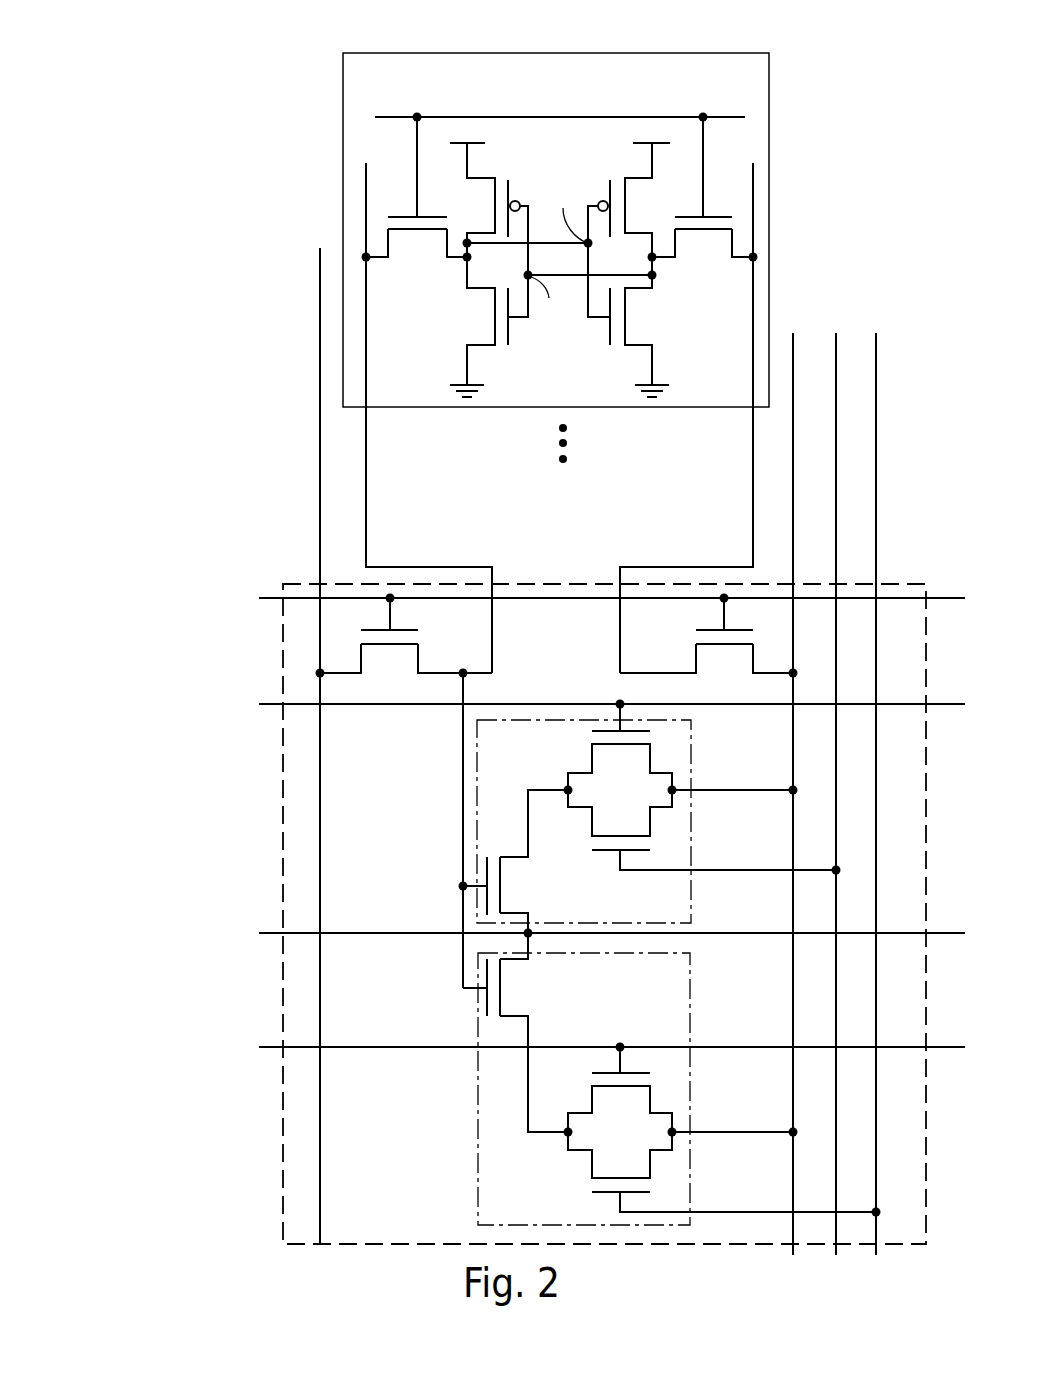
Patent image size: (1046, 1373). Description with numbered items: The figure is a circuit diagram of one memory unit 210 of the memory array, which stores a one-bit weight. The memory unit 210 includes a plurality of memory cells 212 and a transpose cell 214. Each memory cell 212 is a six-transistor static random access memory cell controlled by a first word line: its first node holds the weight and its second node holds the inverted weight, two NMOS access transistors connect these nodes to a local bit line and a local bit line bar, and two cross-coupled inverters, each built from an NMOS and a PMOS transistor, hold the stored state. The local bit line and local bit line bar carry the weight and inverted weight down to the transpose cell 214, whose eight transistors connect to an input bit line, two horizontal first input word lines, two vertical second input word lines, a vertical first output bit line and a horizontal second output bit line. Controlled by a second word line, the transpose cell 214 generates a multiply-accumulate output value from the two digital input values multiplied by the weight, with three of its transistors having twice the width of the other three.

The memory unit 210 is at (93, 31).
The memory cell 212 is at (343, 86).
The transpose cell 214 is at (274, 766).